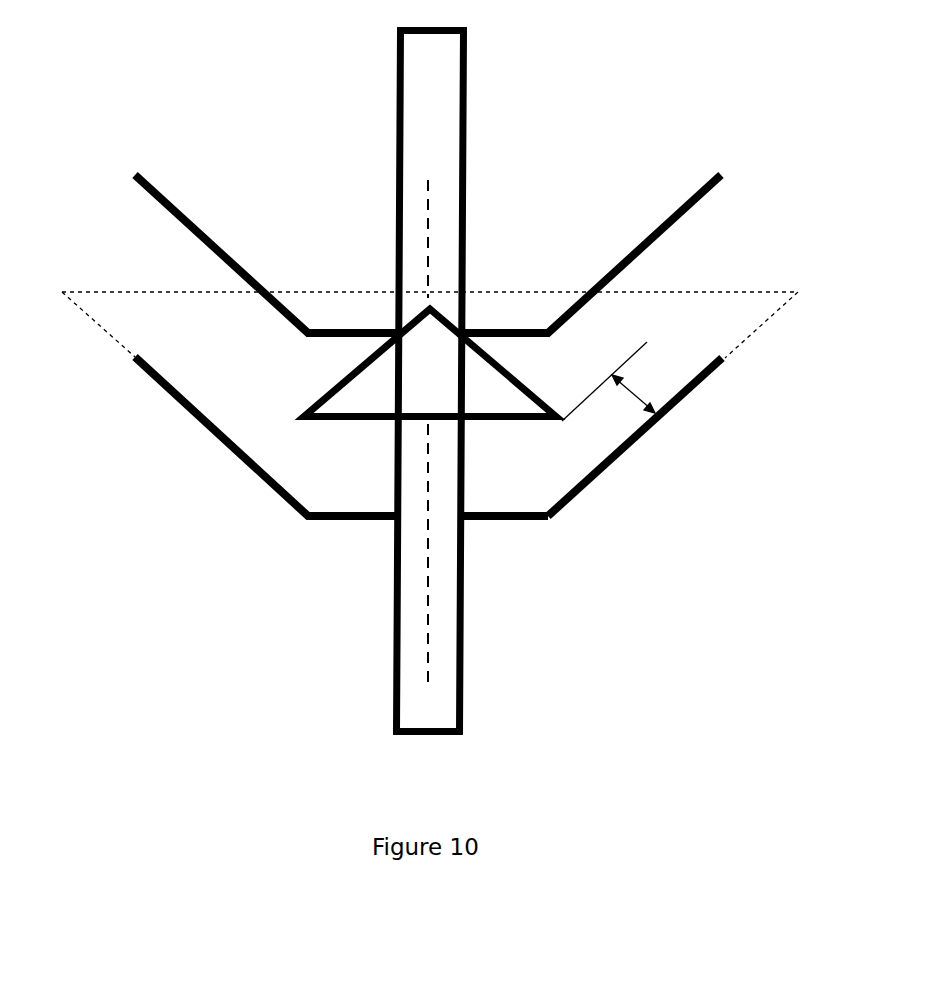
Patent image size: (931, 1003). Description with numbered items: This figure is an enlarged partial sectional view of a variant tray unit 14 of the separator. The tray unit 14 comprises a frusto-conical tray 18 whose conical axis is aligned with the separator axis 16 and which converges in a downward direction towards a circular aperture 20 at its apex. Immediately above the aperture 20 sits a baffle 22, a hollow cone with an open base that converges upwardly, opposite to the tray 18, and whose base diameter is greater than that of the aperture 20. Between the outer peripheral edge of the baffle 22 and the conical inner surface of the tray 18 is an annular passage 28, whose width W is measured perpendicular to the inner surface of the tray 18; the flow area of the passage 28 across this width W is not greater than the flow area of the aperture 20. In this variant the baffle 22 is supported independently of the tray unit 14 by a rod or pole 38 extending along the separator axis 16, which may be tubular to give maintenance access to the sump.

The tray unit 14 is at (160, 269).
The separator axis 16 is at (428, 218).
The frusto-conical tray 18 is at (188, 412).
The circular aperture 20 is at (503, 522).
The baffle 22 is at (518, 390).
The annular passage 28 is at (587, 433).
The rod or pole 38 is at (466, 78).
The width of the annular passage W is at (617, 384).